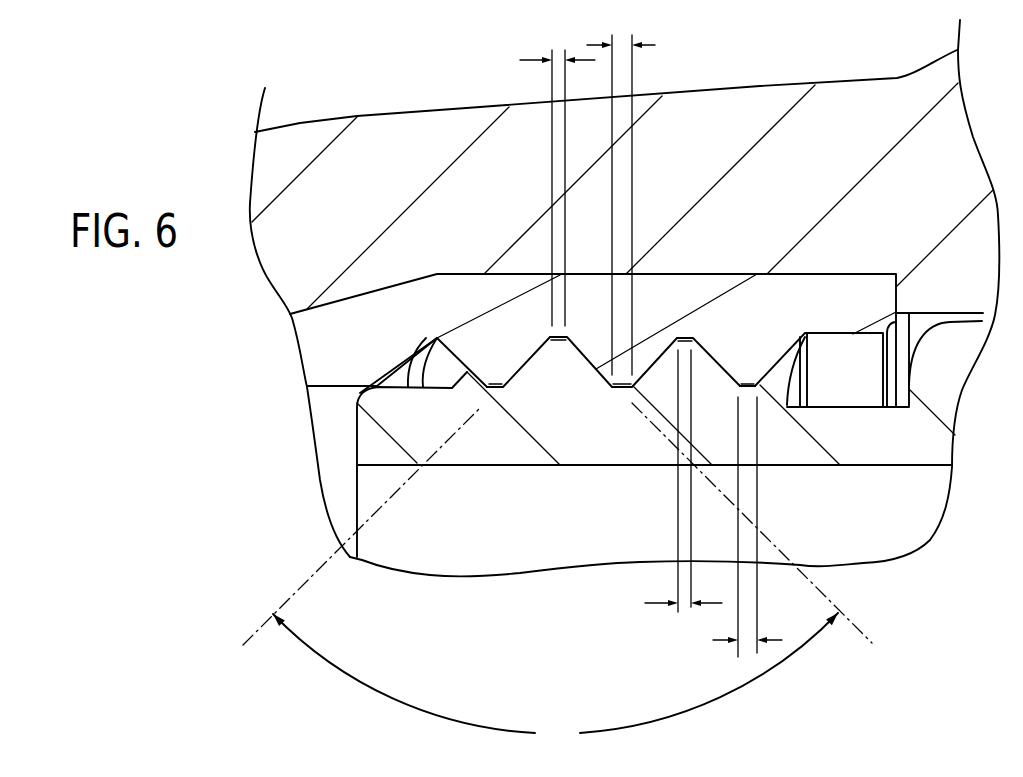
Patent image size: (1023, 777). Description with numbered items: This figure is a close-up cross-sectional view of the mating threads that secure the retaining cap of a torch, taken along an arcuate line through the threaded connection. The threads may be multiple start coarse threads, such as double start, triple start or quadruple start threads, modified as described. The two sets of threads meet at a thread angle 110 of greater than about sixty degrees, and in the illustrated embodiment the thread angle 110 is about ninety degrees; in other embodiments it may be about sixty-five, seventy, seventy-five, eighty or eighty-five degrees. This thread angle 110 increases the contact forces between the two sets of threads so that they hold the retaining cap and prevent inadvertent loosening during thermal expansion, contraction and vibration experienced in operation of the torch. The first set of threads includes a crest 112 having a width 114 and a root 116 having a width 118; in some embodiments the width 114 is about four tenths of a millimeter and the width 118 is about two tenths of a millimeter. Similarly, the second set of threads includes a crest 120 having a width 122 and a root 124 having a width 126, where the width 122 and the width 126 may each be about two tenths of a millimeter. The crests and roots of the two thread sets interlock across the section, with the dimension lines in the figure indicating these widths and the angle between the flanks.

The thread angle 110 is at (557, 575).
The crest 112 is at (494, 384).
The width 114 is at (621, 40).
The root 116 is at (435, 337).
The width 118 is at (559, 57).
The crest 120 is at (686, 337).
The width 122 is at (682, 612).
The root 124 is at (747, 385).
The width 126 is at (747, 650).